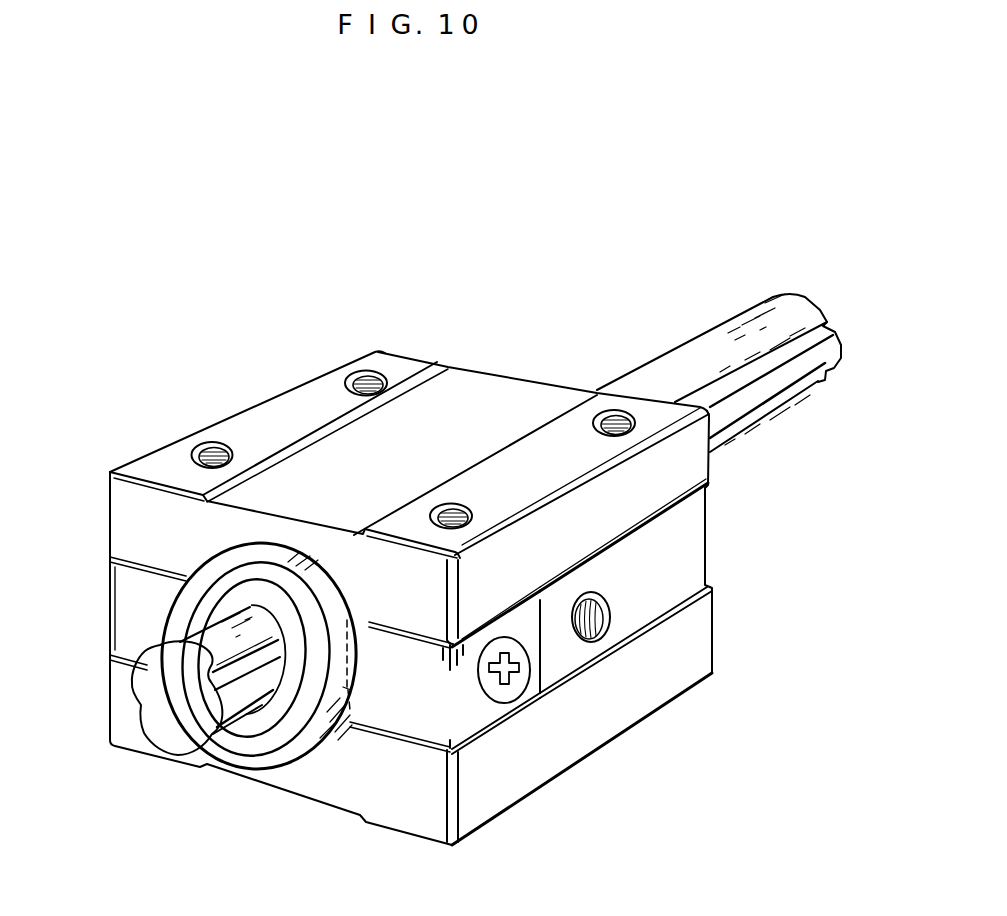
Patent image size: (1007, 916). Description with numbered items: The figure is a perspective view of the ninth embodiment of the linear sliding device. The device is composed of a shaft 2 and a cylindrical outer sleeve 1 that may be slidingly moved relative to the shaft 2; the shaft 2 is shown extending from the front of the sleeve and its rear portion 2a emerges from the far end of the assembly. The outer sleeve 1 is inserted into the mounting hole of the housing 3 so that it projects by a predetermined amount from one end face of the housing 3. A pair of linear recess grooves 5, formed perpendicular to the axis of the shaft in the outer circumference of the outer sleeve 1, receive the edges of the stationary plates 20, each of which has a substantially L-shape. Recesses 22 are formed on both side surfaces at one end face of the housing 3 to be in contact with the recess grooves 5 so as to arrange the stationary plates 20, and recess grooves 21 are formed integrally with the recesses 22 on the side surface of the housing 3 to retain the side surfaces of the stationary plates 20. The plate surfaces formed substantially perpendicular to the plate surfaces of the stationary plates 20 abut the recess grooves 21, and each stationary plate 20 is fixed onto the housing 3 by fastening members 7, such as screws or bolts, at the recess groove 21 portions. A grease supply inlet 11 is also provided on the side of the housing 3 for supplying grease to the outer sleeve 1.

The outer sleeve 1 is at (243, 762).
The shaft 2 is at (140, 693).
The spline shaft rear portion 2a is at (822, 337).
The housing 3 is at (237, 417).
The recess groove 5 is at (348, 723).
The fastening member 7 is at (520, 688).
The grease supply inlet 11 is at (607, 630).
The stationary plate 20 is at (122, 625).
The recess groove 21 is at (673, 578).
The recess 22 is at (110, 557).